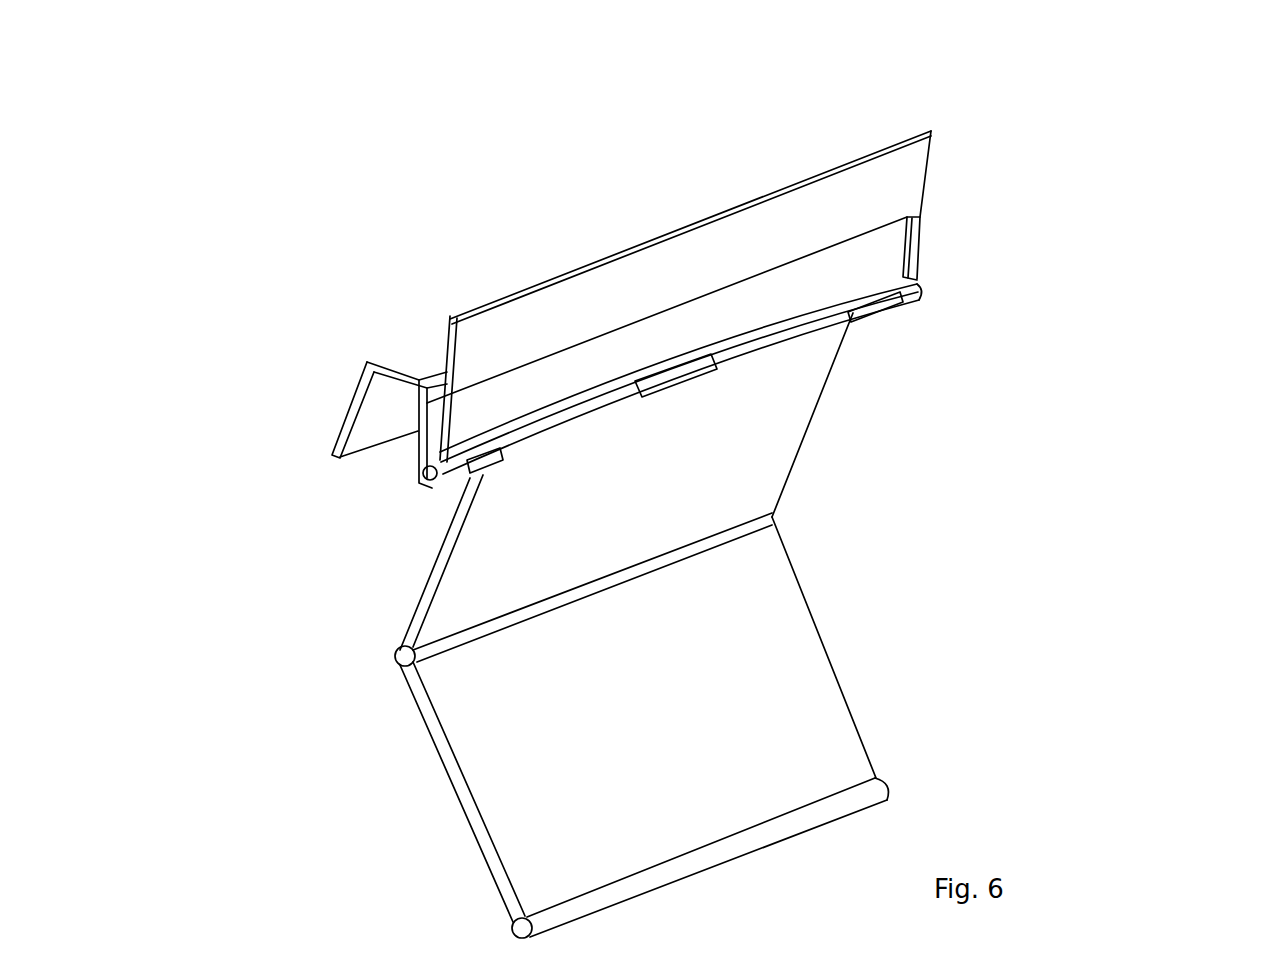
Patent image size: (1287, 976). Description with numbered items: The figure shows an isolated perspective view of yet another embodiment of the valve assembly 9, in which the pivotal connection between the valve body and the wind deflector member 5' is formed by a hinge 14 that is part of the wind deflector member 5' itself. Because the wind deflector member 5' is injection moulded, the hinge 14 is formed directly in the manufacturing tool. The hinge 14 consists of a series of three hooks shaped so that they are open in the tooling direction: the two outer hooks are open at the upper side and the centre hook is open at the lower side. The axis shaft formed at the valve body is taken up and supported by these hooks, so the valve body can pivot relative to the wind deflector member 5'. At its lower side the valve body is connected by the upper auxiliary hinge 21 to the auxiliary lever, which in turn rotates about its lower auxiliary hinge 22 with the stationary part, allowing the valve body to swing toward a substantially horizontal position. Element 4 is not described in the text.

The sign frame 4 is at (833, 710).
The wind deflector member 5' is at (370, 272).
The valve assembly 9 is at (668, 336).
The hinge 14 is at (487, 478).
The upper auxiliary hinge 21 is at (787, 509).
The lower auxiliary hinge 22 is at (900, 789).